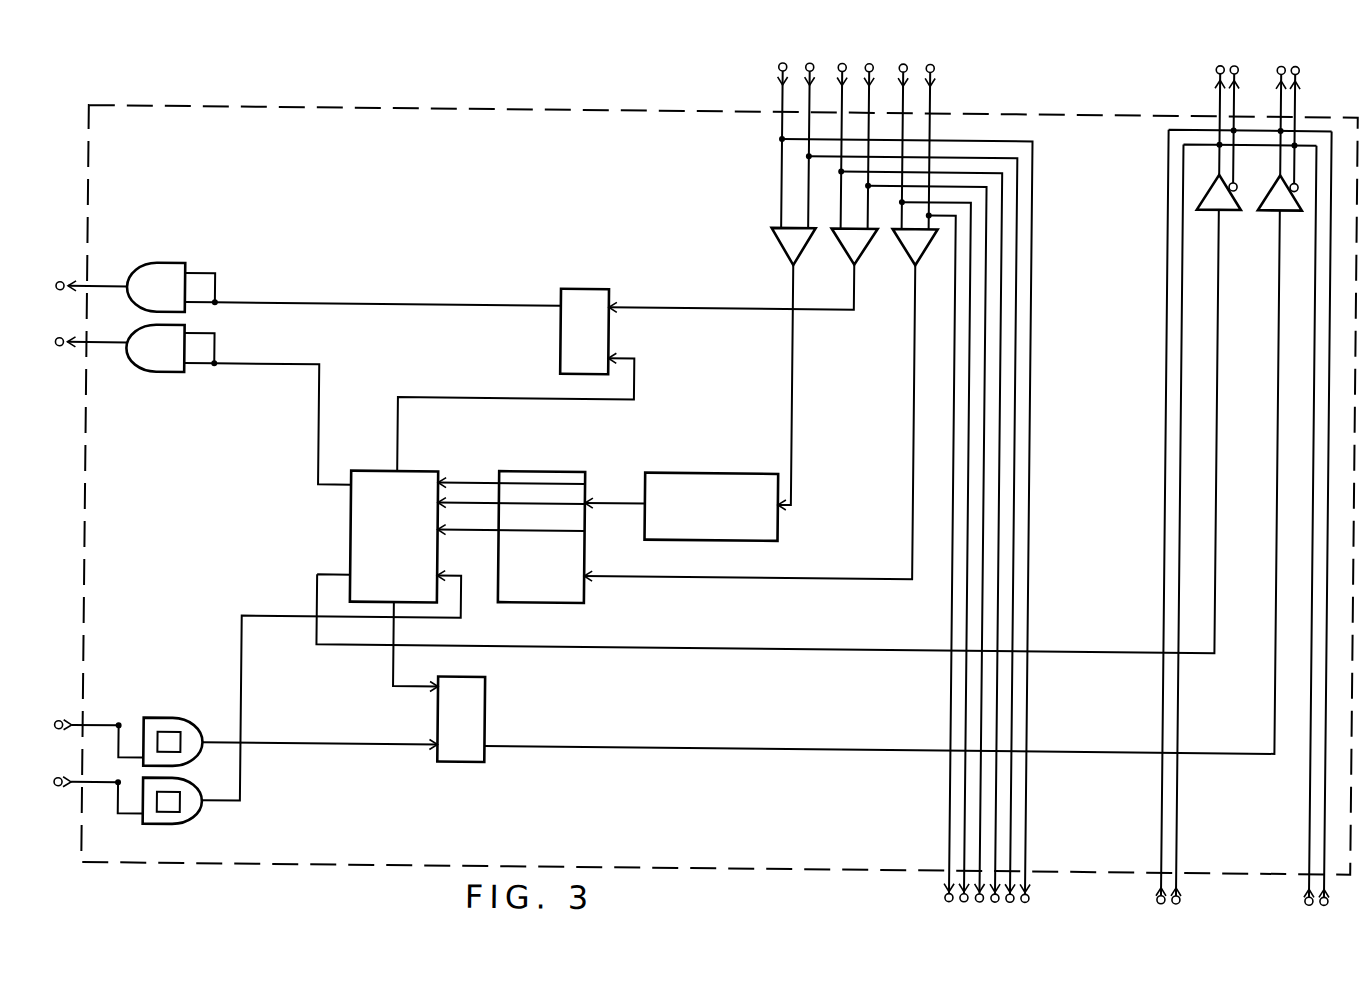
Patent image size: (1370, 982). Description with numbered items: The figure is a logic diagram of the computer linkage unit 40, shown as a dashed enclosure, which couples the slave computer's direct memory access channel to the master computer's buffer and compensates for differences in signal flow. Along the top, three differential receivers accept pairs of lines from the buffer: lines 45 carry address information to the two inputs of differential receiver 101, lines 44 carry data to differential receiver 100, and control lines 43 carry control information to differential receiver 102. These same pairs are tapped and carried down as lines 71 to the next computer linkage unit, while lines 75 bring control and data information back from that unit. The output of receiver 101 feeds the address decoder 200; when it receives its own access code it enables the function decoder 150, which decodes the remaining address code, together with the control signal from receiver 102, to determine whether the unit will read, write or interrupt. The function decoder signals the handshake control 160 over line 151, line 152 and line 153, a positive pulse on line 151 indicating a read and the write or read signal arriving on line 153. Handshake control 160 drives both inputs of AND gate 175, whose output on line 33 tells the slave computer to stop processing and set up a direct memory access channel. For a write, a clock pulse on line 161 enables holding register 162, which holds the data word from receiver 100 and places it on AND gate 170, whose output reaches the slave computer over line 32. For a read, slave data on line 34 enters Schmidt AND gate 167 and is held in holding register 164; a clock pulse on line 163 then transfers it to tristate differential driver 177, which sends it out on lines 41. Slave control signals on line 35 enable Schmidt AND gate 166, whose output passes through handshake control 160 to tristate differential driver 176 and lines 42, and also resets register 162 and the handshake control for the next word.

The computer linkage unit 40 is at (486, 86).
The line 32 is at (58, 288).
The line 33 is at (58, 344).
The line 34 is at (60, 727).
The line 35 is at (60, 784).
The lines 41 is at (1289, 60).
The lines 42 is at (1223, 63).
The control lines 43 is at (926, 62).
The lines 44 is at (865, 62).
The lines 45 is at (805, 62).
The lines 71 is at (958, 904).
The lines 75 is at (1165, 141).
The differential receiver 100 is at (846, 258).
The differential receiver 101 is at (779, 251).
The differential receiver 102 is at (908, 258).
The function decoder 150 is at (575, 477).
The line 151 is at (490, 488).
The line 152 is at (492, 513).
The line 153 is at (492, 536).
The handshake control 160 is at (378, 477).
The line 161 is at (497, 400).
The holding register 162 is at (601, 292).
The line 163 is at (436, 689).
The holding register 164 is at (489, 684).
The Schmidt AND gate 166 is at (192, 813).
The Schmidt AND gate 167 is at (183, 727).
The AND gate 170 is at (172, 271).
The AND gate 175 is at (141, 333).
The tristate differential driver 176 is at (1244, 188).
The tristate differential driver 177 is at (1272, 208).
The address decoder 200 is at (731, 477).